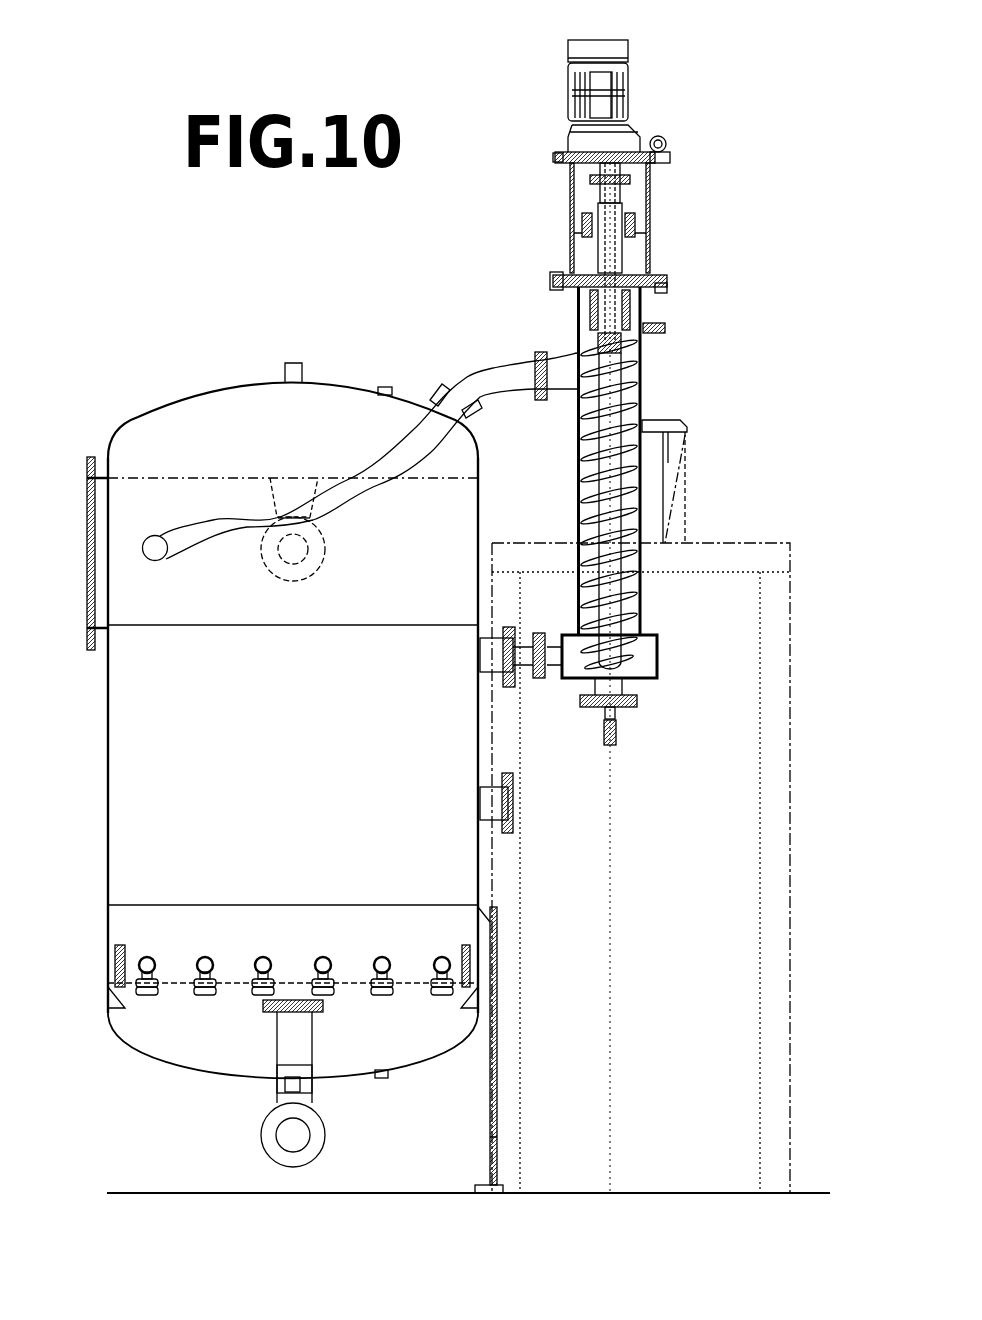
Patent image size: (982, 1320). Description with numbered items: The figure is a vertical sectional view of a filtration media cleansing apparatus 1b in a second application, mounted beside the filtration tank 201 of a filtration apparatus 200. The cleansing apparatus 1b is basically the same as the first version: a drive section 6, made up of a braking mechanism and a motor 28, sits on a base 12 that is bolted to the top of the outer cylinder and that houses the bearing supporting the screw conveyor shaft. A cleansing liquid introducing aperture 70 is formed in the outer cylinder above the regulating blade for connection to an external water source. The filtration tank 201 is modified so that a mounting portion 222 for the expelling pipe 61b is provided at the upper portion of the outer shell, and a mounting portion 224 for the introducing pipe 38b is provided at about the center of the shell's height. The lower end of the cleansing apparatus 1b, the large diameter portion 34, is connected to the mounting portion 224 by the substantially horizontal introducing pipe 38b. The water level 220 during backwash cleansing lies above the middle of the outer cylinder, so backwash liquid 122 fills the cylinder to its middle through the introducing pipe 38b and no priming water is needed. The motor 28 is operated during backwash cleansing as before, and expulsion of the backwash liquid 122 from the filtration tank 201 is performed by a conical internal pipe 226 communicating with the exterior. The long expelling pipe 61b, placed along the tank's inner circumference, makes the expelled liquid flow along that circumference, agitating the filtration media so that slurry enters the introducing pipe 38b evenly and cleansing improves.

The filtration apparatus 200 is at (191, 308).
The filtration tank 201 is at (268, 382).
The water level 220 is at (148, 477).
The backwash liquid 122 is at (173, 613).
The conical internal pipe 226 is at (267, 492).
The mounting portion 222 is at (428, 406).
The cleansing apparatus 1b is at (733, 159).
The motor 28 is at (636, 89).
The drive section 6 is at (552, 126).
The base 12 is at (650, 202).
The cleansing liquid introducing aperture 70 is at (653, 323).
The expelling pipe 61b is at (555, 352).
The large diameter portion 34 is at (657, 657).
The introducing pipe 38b is at (555, 668).
The mounting portion 224 is at (496, 630).